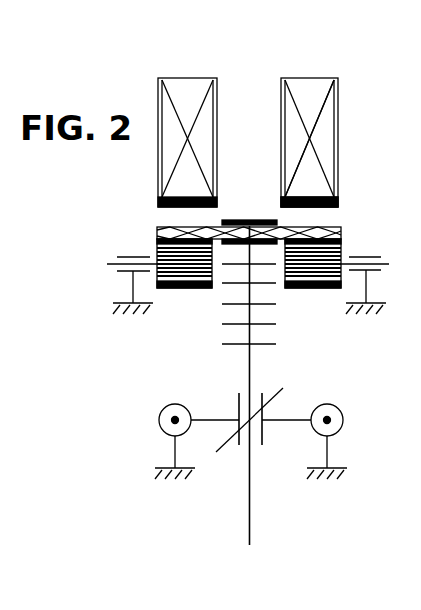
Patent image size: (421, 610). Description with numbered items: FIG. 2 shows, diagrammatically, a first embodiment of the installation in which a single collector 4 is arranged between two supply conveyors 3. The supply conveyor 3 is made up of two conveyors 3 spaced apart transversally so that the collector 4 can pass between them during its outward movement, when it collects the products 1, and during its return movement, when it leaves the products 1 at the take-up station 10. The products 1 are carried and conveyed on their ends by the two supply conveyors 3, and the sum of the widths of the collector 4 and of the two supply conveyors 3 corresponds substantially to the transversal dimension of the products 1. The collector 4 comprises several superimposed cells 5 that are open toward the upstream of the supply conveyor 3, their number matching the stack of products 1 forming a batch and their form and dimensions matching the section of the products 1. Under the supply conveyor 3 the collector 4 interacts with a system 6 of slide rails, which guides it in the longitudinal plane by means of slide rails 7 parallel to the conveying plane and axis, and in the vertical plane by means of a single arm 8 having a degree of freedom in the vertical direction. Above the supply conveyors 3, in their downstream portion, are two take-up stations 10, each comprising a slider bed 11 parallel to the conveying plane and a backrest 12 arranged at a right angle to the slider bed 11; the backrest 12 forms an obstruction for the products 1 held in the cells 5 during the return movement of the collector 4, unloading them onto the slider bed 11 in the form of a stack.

The products 1 is at (334, 233).
The supply conveyor 3 is at (173, 288).
The collector 4 is at (256, 210).
The cells 5 is at (235, 335).
The system of slide rails 6 is at (297, 396).
The slide rails 7 is at (175, 420).
The arm 8 is at (249, 517).
The take-up station 10 is at (171, 66).
The slider bed 11 is at (322, 198).
The backrest 12 is at (330, 118).